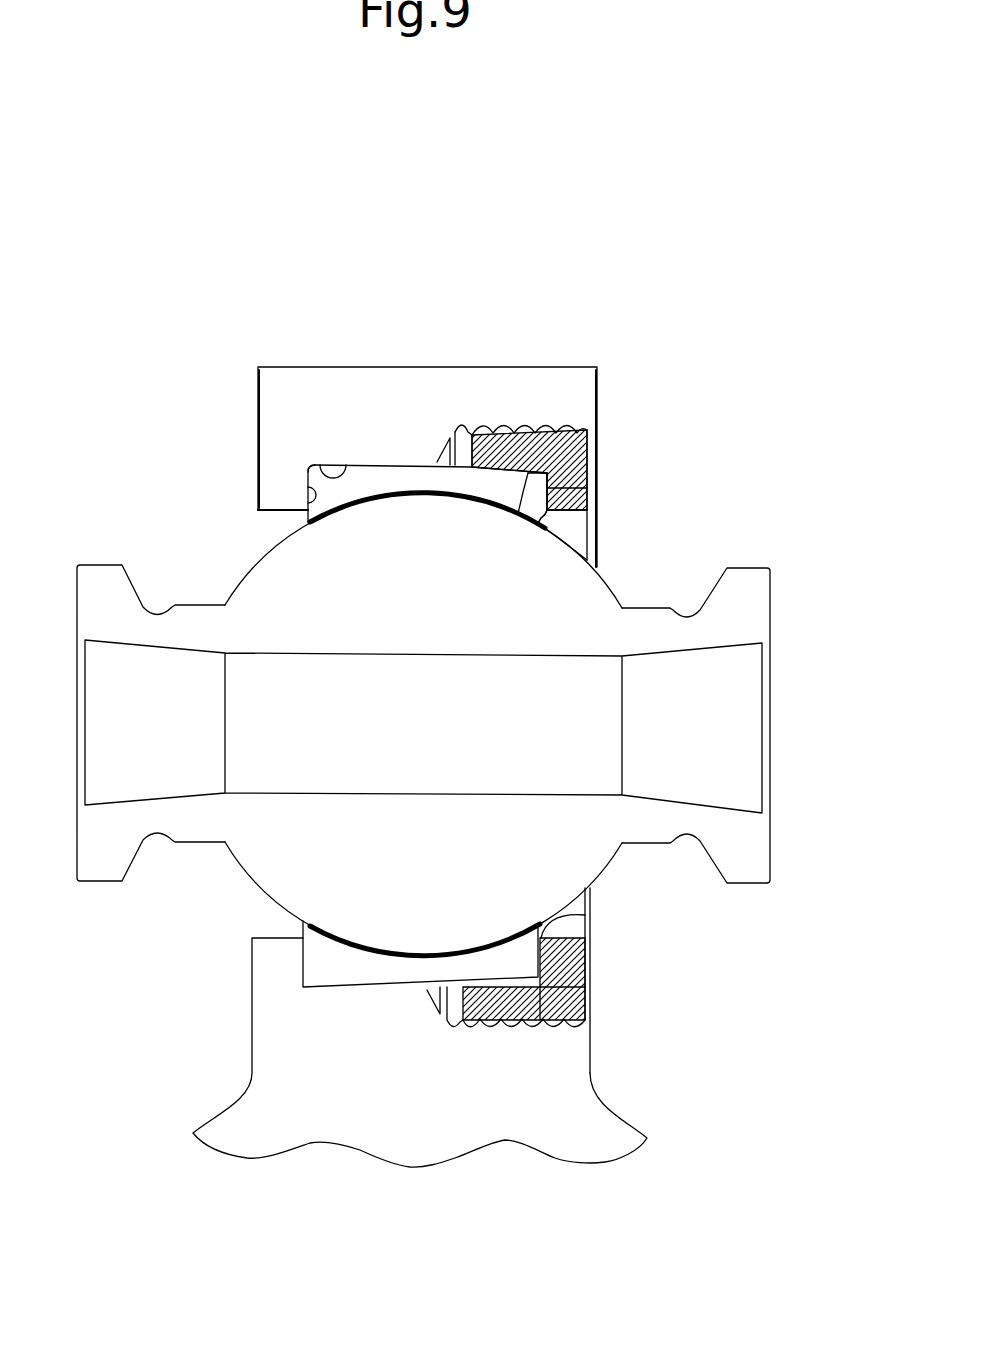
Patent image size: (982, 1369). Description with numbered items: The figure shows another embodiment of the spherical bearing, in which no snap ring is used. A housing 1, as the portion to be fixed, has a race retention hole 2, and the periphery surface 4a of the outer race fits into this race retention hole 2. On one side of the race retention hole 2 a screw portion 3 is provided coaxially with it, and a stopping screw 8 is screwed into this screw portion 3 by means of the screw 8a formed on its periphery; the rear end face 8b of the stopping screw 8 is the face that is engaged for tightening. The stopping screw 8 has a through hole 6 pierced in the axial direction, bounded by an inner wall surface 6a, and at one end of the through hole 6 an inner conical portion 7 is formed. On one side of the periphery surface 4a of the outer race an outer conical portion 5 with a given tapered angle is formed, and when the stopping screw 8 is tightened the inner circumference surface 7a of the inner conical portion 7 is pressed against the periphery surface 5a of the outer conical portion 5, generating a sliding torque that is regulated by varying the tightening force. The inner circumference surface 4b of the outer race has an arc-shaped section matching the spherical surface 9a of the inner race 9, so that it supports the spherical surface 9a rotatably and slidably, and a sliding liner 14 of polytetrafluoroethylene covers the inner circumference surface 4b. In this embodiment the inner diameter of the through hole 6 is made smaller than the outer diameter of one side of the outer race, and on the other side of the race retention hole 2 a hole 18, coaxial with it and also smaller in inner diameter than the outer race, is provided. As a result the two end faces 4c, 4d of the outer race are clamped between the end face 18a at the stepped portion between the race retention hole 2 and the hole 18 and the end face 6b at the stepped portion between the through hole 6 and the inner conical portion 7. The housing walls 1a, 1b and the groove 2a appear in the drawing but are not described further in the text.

The housing 1 is at (380, 356).
The housing side wall 1a is at (598, 388).
The housing side wall 1b is at (258, 455).
The race retention hole 2 is at (378, 500).
The groove 2a is at (305, 468).
The screw portion 3 is at (480, 423).
The periphery surface 4a is at (362, 463).
The inner circumference surface 4b is at (420, 498).
The end face 4c is at (305, 470).
The end face 4d is at (588, 486).
The outer conical portion 5 is at (513, 1000).
The periphery surface 5a is at (498, 1028).
The through hole 6 is at (575, 528).
The inner wall surface 6a is at (592, 908).
The end face 6b is at (540, 938).
The inner conical portion 7 is at (504, 485).
The inner circumference surface 7a is at (524, 495).
The stopping screw 8 is at (532, 414).
The screw 8a is at (565, 423).
The rear end face 8b is at (588, 448).
The inner race 9 is at (748, 612).
The spherical surface 9a is at (372, 947).
The sliding liner 14 is at (344, 917).
The hole 18 is at (275, 524).
The end face 18a is at (305, 497).